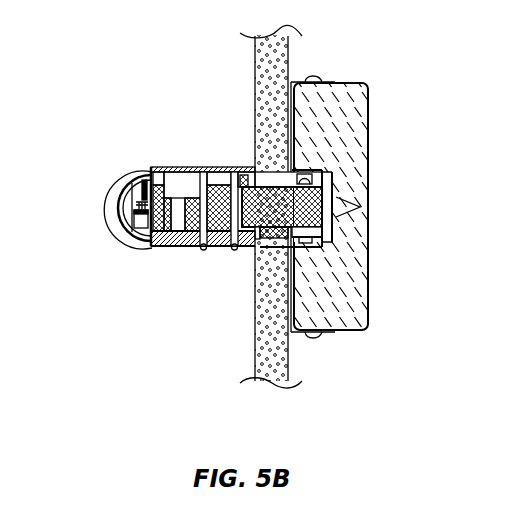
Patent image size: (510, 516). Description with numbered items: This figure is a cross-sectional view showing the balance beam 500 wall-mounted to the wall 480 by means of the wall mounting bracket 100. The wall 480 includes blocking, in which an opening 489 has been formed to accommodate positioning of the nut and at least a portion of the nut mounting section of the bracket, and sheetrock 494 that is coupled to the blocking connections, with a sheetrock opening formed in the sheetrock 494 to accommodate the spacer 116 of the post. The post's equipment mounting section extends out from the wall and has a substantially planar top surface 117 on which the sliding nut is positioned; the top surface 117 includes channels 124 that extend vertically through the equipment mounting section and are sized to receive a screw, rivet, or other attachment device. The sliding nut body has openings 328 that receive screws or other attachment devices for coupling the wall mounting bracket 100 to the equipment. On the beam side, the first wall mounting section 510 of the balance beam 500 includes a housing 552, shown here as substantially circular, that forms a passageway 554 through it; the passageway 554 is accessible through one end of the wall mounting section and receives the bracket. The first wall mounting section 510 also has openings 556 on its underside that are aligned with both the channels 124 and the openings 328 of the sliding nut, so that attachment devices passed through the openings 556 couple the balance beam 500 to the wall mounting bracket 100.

The wall 480 is at (340, 50).
The sheetrock 494 is at (256, 82).
The wall mounting bracket 100 is at (290, 198).
The spacer 116 is at (268, 240).
The opening 489 is at (322, 230).
The openings 328 is at (227, 170).
The first wall mounting section 510 is at (152, 247).
The balance beam 500 is at (108, 190).
The housing 552 is at (148, 172).
The top surface 117 is at (174, 188).
The passageway 554 is at (186, 184).
The openings 556 is at (205, 250).
The channels 124 is at (233, 250).